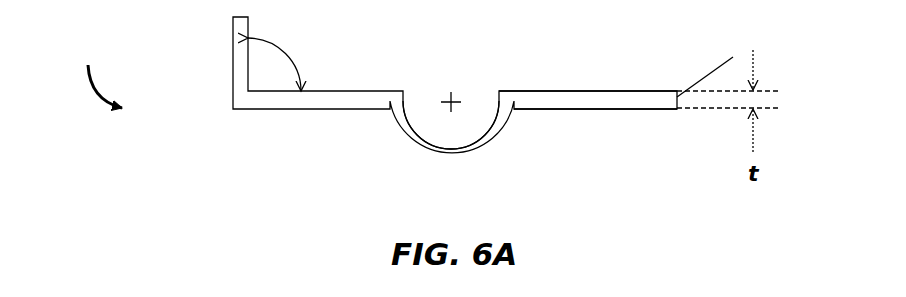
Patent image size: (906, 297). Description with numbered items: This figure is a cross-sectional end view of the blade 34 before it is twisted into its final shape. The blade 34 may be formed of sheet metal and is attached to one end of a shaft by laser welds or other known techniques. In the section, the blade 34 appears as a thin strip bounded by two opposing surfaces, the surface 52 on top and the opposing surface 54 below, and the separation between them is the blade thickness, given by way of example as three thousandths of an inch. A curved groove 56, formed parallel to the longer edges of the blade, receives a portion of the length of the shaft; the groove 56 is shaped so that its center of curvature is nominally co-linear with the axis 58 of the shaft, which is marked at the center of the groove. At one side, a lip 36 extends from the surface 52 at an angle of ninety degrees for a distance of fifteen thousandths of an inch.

The blade 34 is at (99, 71).
The lip 36 is at (232, 50).
The surface 52 is at (593, 90).
The opposing surface 54 is at (570, 110).
The curved groove 56 is at (487, 133).
The axis 58 is at (448, 98).